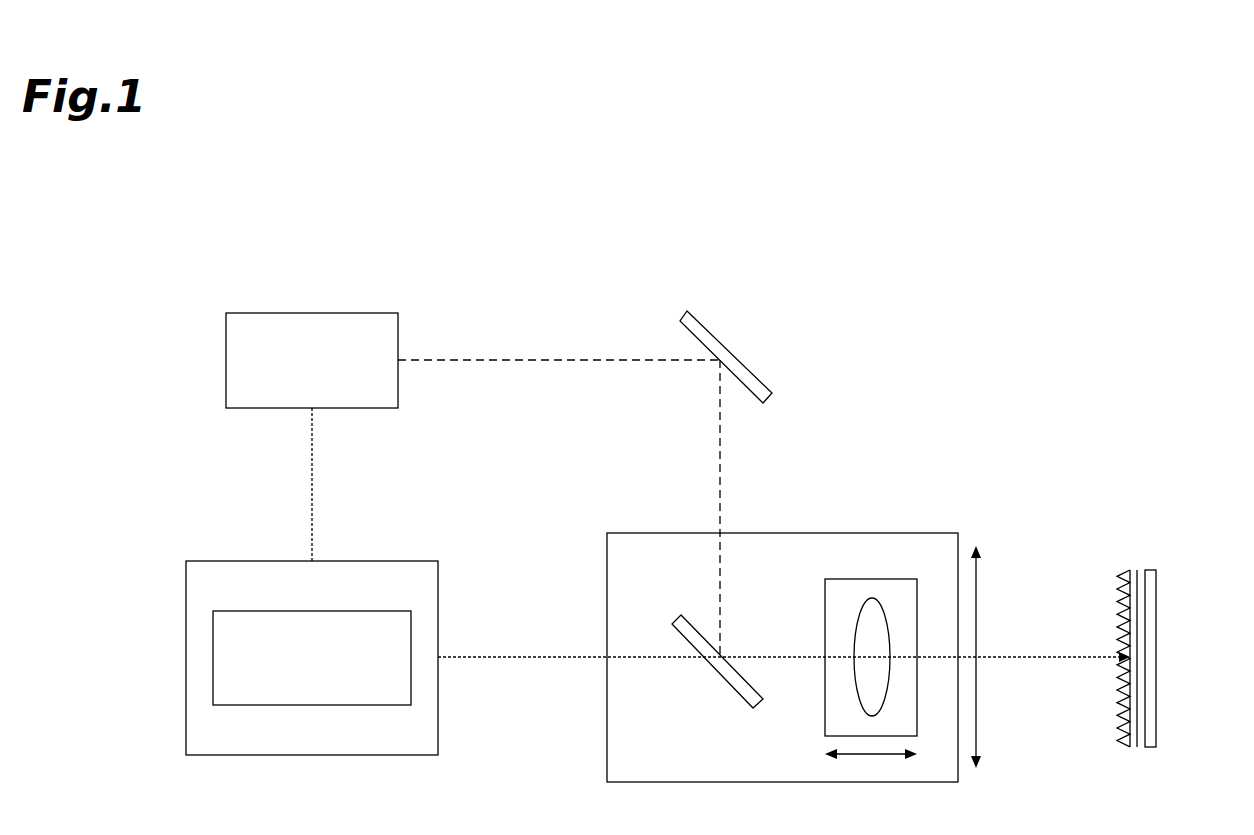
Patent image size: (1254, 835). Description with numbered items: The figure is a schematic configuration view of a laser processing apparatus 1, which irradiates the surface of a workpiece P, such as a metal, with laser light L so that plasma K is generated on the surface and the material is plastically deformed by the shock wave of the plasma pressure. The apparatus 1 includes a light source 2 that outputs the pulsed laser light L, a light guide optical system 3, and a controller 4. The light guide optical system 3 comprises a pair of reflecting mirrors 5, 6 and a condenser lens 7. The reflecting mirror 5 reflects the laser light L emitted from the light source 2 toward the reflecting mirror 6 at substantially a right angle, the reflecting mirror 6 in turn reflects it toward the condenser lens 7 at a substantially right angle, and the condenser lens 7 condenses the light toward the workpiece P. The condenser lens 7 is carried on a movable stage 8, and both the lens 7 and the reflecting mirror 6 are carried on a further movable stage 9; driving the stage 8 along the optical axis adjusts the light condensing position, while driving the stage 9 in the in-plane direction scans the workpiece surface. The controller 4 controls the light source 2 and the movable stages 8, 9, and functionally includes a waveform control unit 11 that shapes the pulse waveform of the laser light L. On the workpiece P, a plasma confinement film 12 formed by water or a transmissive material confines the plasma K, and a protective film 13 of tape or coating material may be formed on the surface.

The laser processing apparatus 1 is at (246, 250).
The light source 2 is at (226, 361).
The light guide optical system 3 is at (911, 356).
The controller 4 is at (186, 600).
The reflecting mirror 5 is at (712, 333).
The reflecting mirror 6 is at (724, 678).
The condenser lens 7 is at (873, 598).
The movable stage 8 is at (825, 613).
The movable stage 9 is at (607, 722).
The waveform control unit 11 is at (411, 633).
The plasma confinement film 12 is at (1130, 600).
The protective film 13 is at (1137, 604).
The plasma K is at (1118, 637).
The workpiece P is at (1157, 643).
The laser light L is at (542, 358).